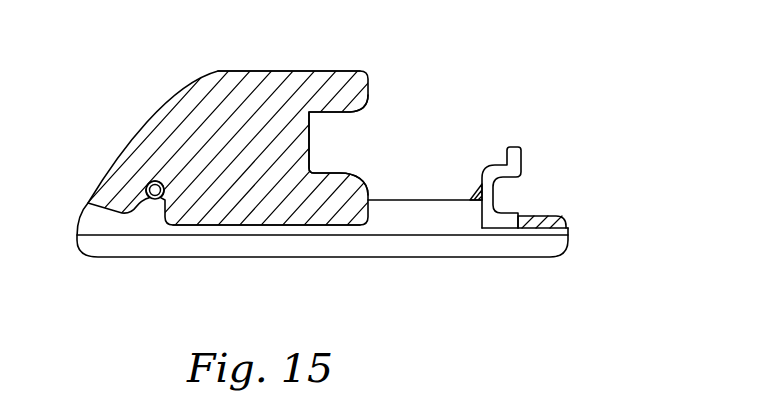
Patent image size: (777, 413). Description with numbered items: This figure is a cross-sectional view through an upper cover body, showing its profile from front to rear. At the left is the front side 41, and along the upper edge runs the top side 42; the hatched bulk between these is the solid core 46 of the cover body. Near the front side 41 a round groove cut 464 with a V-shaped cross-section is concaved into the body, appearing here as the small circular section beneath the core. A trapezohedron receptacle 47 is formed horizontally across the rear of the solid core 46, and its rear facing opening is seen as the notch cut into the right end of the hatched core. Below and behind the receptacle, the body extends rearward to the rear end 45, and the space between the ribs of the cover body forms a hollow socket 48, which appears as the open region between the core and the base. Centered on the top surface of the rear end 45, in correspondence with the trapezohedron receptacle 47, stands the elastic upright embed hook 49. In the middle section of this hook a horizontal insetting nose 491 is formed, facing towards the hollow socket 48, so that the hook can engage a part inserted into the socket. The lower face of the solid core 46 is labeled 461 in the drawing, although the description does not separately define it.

The front side 41 is at (133, 126).
The top side 42 is at (287, 71).
The rear end 45 is at (565, 218).
The solid core 46 is at (196, 138).
The trapezohedron receptacle 47 is at (338, 138).
The hollow socket 48 is at (433, 218).
The elastic upright embed hook 49 is at (522, 152).
The bottom surface of block 461 is at (308, 226).
The round groove cut 464 is at (148, 206).
The horizontal insetting nose 491 is at (478, 186).